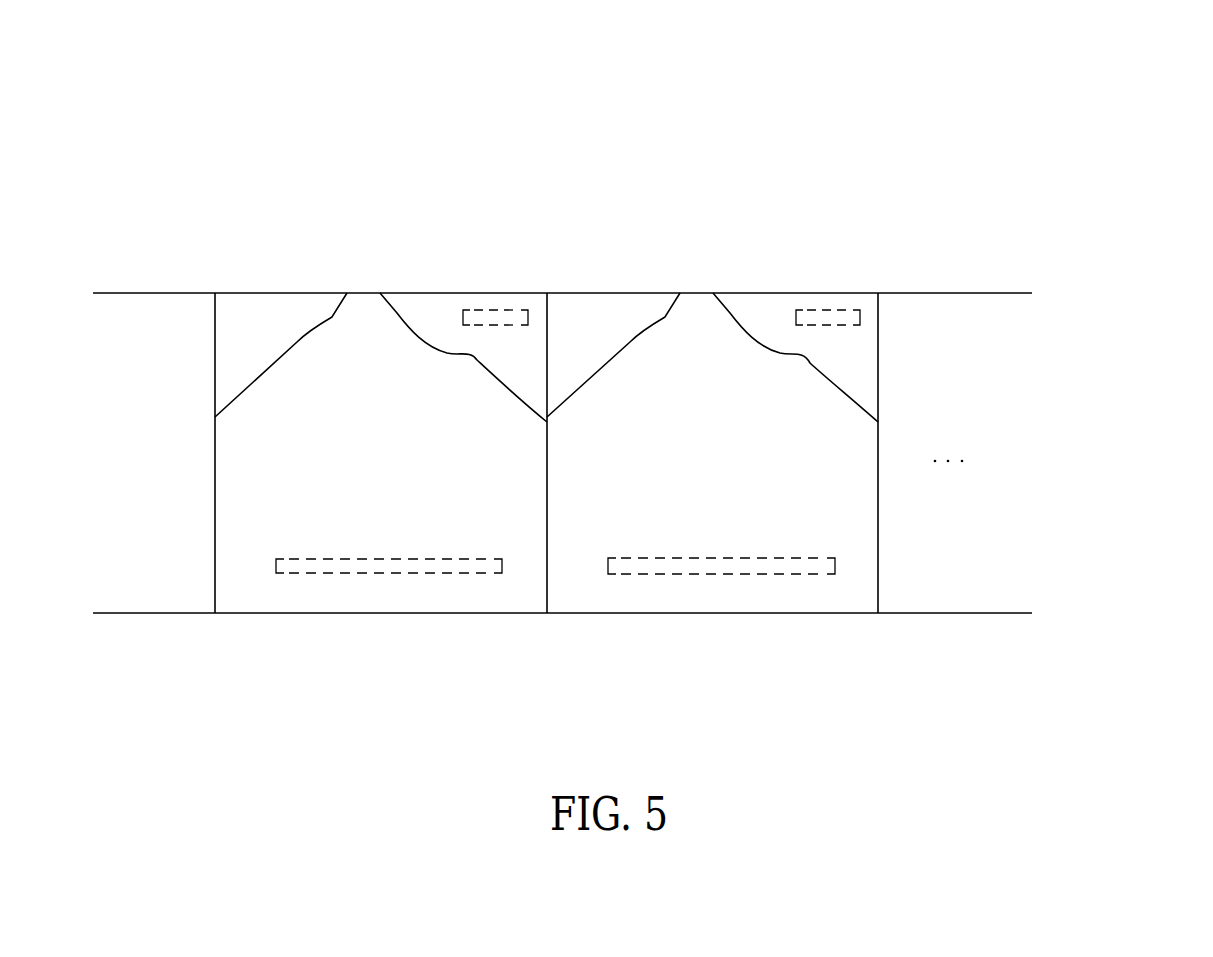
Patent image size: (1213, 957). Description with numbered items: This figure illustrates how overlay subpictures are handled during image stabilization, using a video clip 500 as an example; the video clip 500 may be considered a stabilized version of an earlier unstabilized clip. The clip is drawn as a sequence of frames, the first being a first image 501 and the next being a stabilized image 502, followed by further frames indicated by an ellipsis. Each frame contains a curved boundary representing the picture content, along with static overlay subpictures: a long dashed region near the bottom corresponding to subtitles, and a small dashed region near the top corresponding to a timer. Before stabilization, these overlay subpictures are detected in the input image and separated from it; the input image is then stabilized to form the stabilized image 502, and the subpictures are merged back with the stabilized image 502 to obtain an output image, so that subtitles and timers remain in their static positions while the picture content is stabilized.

The video clip 500 is at (1070, 143).
The first pixel region 501 is at (268, 315).
The stabilized image 502 is at (600, 315).